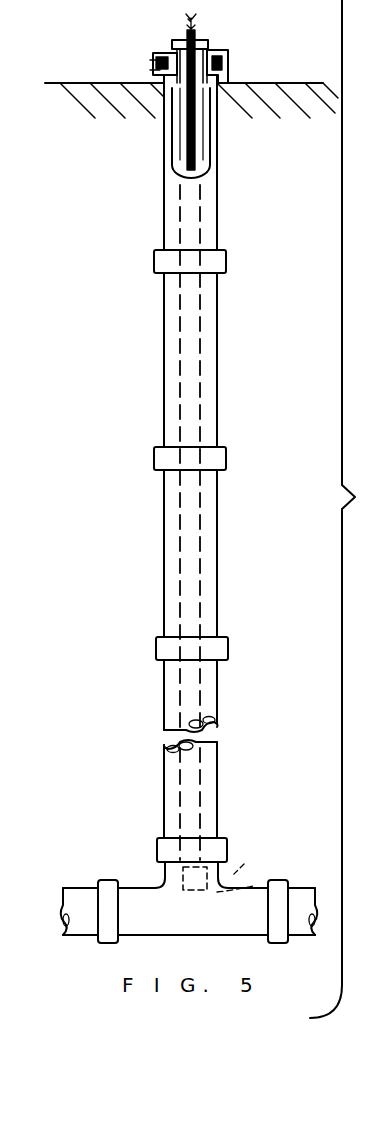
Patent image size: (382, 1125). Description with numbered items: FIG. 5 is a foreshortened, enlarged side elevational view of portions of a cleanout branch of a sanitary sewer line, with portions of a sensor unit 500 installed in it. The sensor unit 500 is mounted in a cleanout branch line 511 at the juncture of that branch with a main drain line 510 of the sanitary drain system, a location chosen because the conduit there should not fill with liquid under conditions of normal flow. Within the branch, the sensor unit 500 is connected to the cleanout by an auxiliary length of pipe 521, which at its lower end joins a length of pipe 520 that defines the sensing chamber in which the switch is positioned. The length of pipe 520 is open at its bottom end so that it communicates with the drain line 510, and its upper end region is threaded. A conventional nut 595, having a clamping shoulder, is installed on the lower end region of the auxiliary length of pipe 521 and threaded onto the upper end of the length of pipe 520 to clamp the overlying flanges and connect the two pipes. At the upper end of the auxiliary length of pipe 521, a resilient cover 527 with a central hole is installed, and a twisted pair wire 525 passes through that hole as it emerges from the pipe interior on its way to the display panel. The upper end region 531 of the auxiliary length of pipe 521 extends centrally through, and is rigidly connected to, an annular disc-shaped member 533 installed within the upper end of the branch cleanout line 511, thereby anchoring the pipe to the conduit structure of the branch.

The sensor unit 500 is at (246, 862).
The main drain line 510 is at (88, 932).
The cleanout branch line 511 is at (217, 527).
The length of pipe 520 is at (226, 879).
The auxiliary length of pipe 521 is at (172, 150).
The twisted pair wire 525 is at (196, 22).
The resilient cover 527 is at (172, 40).
The upper end region 531 is at (152, 62).
The annular disc-shaped member 533 is at (228, 50).
The nut 595 is at (163, 880).